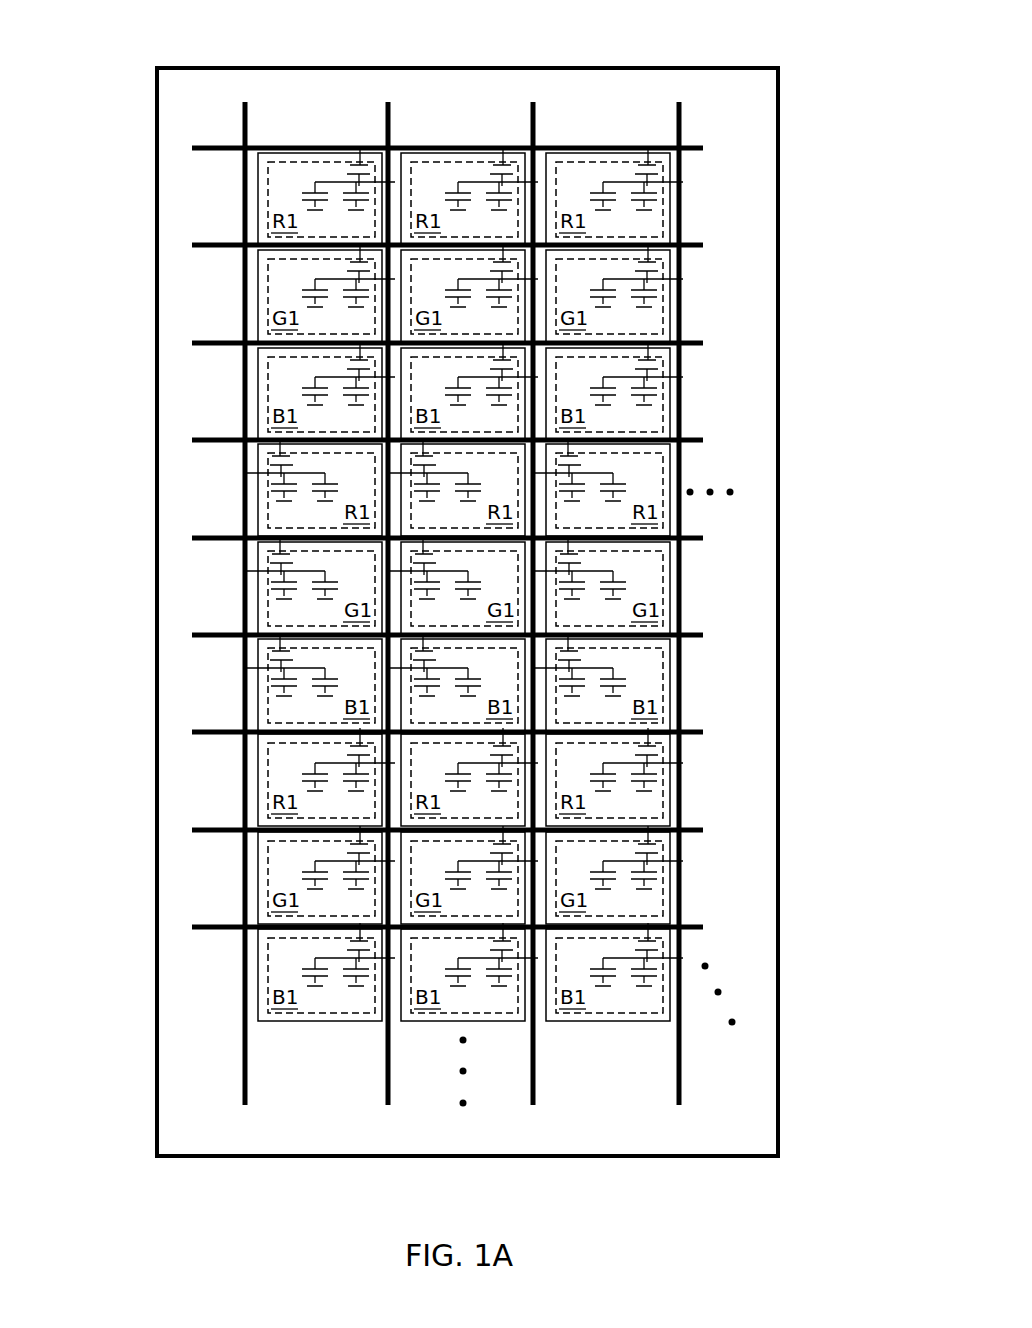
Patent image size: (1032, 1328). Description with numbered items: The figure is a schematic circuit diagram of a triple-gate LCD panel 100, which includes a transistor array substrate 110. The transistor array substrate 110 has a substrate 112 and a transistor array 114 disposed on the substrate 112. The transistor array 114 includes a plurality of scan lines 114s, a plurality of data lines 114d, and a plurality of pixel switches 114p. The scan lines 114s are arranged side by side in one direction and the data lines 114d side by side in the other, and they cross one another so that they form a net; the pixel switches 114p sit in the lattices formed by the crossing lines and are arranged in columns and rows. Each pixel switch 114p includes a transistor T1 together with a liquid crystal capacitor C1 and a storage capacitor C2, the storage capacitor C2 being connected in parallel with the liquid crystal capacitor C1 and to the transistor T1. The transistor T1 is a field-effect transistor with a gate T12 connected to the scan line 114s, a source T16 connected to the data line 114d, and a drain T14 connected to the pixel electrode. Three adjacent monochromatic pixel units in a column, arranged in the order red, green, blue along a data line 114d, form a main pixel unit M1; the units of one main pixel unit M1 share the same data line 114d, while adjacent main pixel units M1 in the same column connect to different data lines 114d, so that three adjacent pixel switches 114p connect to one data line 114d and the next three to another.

The triple-gate LCD panel 100 is at (484, 613).
The transistor array substrate 110 is at (808, 85).
The substrate 112 is at (757, 181).
The transistor array 114 is at (469, 603).
The scan line 114s is at (205, 148).
The data line 114d is at (247, 121).
The pixel switch 114p is at (698, 471).
The main pixel unit M1 is at (488, 605).
The transistor T1 is at (664, 267).
The gate T12 is at (727, 123).
The drain T14 is at (655, 182).
The source T16 is at (727, 165).
The liquid crystal capacitor C1 is at (507, 970).
The storage capacitor C2 is at (458, 968).